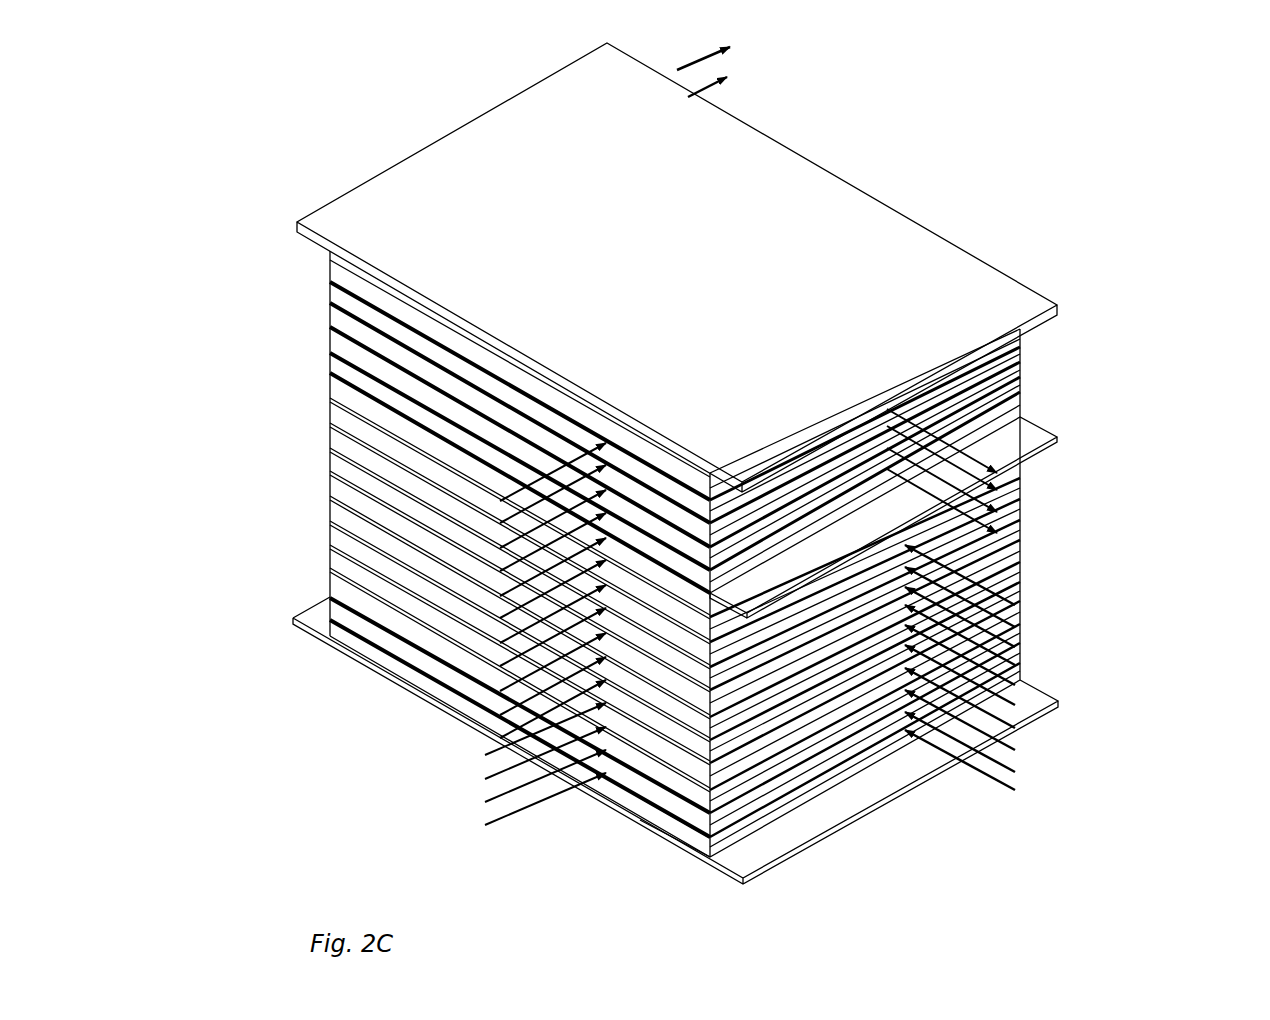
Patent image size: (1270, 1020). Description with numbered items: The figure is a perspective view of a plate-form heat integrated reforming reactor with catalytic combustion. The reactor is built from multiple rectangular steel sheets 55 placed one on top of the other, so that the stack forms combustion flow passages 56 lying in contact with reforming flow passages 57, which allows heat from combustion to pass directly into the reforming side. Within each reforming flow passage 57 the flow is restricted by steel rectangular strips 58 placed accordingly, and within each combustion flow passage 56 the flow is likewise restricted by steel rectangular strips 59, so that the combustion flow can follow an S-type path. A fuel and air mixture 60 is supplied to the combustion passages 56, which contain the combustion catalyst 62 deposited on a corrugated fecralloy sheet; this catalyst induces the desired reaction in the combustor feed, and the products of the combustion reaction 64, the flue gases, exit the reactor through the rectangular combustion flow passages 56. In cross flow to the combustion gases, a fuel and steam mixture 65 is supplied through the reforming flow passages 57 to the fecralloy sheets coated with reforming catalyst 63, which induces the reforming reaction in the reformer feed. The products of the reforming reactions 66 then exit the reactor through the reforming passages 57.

The rectangular steel sheets 55 is at (328, 512).
The combustion flow passages 56 is at (672, 850).
The reforming flow passages 57 is at (1027, 392).
The steel rectangular strips (reforming) 58 is at (318, 600).
The steel rectangular strips (combustion) 59 is at (750, 842).
The fuel and air mixture 60 is at (492, 818).
The combustion catalyst 62 is at (637, 777).
The reforming catalyst 63 is at (1022, 553).
The products of the combustion reaction 64 is at (757, 68).
The fuel and steam mixture 65 is at (1002, 689).
The products of the reforming reactions 66 is at (1066, 471).